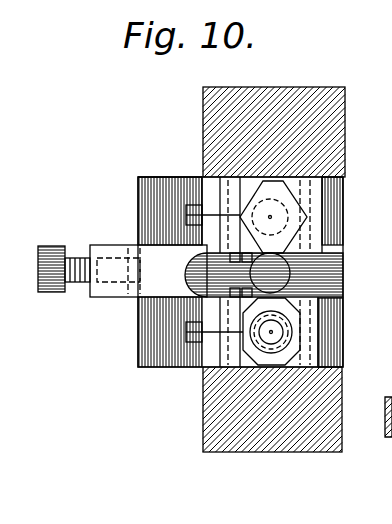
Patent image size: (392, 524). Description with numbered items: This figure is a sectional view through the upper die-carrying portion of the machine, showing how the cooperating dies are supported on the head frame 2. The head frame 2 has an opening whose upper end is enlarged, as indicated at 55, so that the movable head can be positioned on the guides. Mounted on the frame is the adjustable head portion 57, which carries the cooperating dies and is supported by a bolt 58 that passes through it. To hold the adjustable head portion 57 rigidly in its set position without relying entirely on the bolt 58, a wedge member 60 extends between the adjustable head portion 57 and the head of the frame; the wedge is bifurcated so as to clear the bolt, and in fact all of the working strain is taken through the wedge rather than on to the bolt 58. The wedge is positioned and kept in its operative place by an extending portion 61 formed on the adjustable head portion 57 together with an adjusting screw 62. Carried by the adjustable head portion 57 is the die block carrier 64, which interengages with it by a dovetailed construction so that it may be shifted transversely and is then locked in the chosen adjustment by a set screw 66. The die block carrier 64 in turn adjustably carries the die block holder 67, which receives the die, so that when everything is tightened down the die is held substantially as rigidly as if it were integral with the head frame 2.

The head frame 2 is at (318, 95).
The enlarged end of opening 55 is at (323, 368).
The adjustable head portion 57 is at (343, 290).
The bolt 58 is at (291, 283).
The wedge member 60 is at (151, 188).
The extending portion 61 is at (107, 247).
The adjusting screw 62 is at (58, 247).
The die block carrier 64 is at (313, 330).
The set screw 66 is at (193, 205).
The die block holder 67 is at (243, 350).